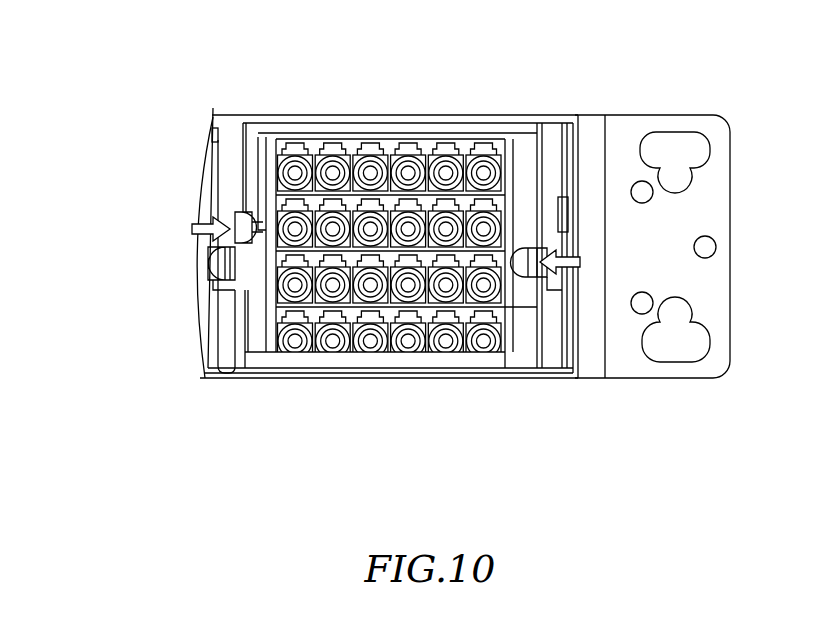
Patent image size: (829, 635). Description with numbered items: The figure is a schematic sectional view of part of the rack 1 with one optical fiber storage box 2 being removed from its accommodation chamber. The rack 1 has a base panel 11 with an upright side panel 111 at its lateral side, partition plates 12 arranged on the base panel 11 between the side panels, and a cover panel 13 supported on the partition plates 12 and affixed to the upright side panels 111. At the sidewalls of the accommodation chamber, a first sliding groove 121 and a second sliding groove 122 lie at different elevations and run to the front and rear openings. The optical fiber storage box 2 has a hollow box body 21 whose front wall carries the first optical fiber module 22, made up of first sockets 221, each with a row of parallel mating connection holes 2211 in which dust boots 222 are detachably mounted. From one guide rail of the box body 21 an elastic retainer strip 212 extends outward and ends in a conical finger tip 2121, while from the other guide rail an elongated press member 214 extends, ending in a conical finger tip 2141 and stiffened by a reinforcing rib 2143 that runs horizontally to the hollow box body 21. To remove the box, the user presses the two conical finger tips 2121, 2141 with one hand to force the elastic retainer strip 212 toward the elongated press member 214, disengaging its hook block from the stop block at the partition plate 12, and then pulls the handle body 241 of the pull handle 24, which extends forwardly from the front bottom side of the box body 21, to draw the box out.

The rack 1 is at (445, 394).
The base panel 11 is at (492, 379).
The upright side panel 111 is at (573, 380).
The partition plate 12 is at (232, 345).
The first sliding groove 121 is at (236, 284).
The second sliding groove 122 is at (247, 205).
The cover panel 13 is at (228, 118).
The optical fiber storage box 2 is at (528, 62).
The hollow box body 21 is at (523, 143).
The elastic retainer strip 212 is at (112, 264).
The conical finger tip 2121 is at (224, 259).
The elongated press member 214 is at (112, 208).
The conical finger tip 2141 is at (236, 214).
The reinforcing rib 2143 is at (257, 120).
The first optical fiber module 22 is at (435, 72).
The first socket 221 is at (427, 142).
The mating connection hole 2211 is at (300, 148).
The dust boot 222 is at (368, 172).
The pull handle 24 is at (408, 378).
The handle body 241 is at (342, 355).